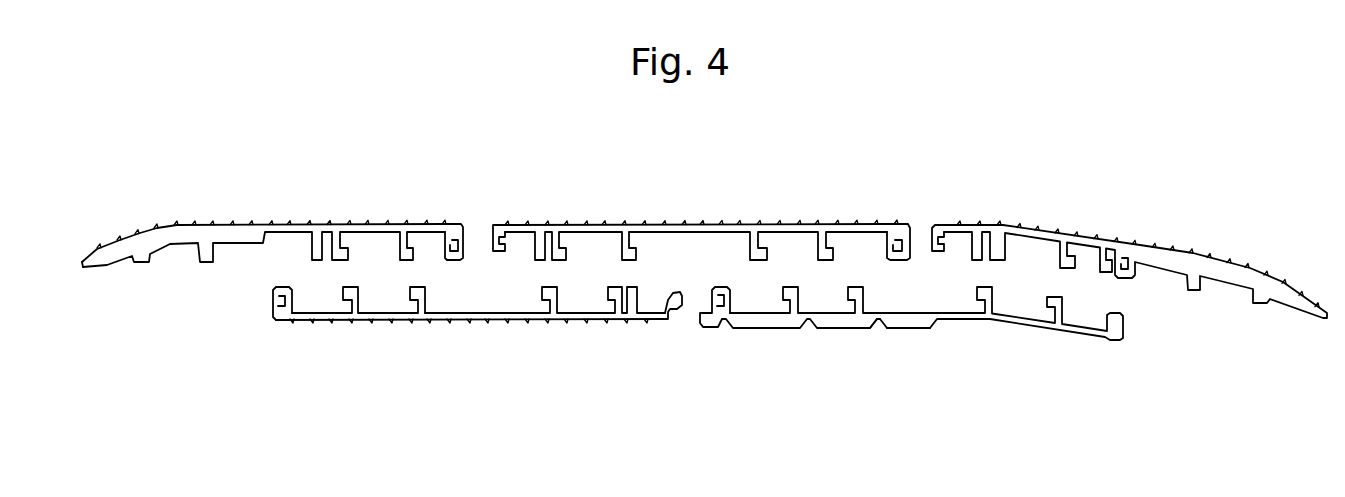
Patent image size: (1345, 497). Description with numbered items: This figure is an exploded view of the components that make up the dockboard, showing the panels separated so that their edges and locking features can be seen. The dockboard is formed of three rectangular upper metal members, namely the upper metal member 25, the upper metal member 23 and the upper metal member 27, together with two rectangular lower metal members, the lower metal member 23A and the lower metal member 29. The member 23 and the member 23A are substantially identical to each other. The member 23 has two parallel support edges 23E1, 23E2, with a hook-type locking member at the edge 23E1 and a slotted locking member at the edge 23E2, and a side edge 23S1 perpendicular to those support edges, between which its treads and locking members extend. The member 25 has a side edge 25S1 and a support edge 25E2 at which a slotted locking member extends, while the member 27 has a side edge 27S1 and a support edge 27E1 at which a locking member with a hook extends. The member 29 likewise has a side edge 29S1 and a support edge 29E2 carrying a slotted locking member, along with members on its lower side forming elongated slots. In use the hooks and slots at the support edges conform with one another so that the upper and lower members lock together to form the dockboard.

The upper metal member 23 is at (743, 226).
The lower metal member 23A is at (519, 338).
The support edge of member 23 23E1 is at (494, 226).
The support edge of member 23 23E2 is at (908, 226).
The side edge of member 23 23S1 is at (625, 226).
The upper metal member 25 is at (357, 222).
The support edge of member 25 25E2 is at (458, 227).
The side edge of member 25 25S1 is at (244, 232).
The upper metal member 27 is at (1184, 252).
The support edge of member 27 27E1 is at (932, 226).
The side edge of member 27 27S1 is at (1072, 240).
The lower metal member 29 is at (973, 318).
The support edge of member 29 29E2 is at (712, 306).
The side edge of member 29 29S1 is at (911, 316).